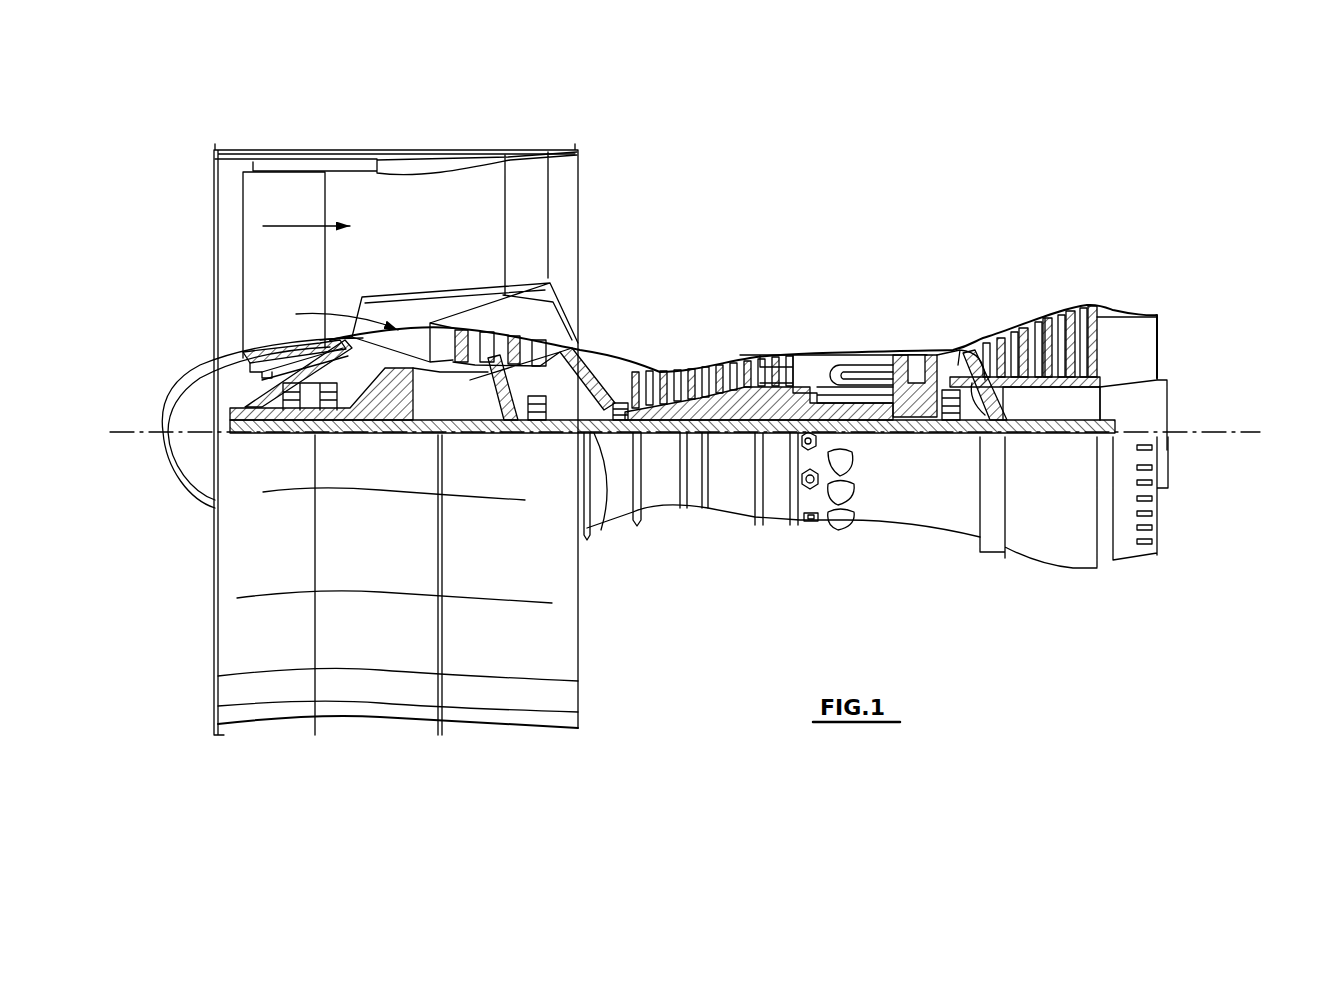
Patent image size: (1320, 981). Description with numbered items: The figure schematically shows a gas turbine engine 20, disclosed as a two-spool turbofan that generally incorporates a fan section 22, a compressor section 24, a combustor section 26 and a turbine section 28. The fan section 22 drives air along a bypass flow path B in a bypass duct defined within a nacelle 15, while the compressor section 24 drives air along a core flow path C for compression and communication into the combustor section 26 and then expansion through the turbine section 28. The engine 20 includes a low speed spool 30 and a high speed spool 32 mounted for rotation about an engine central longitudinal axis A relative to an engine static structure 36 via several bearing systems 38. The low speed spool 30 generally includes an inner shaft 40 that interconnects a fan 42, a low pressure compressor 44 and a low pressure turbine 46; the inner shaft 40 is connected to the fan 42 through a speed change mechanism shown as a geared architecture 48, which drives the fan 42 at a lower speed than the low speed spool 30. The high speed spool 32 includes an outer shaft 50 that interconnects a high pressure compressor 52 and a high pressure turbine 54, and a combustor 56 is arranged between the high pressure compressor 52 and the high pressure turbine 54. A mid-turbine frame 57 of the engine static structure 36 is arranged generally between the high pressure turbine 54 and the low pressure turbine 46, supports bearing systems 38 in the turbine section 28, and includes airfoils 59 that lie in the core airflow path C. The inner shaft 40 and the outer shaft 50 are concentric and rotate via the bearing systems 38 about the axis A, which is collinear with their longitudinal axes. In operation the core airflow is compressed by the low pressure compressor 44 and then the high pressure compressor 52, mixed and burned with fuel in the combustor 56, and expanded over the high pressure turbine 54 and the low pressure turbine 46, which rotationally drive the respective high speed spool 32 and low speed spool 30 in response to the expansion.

The gas turbine engine 20 is at (860, 198).
The fan section 22 is at (326, 140).
The nacelle 15 is at (396, 156).
The fan 42 is at (300, 279).
The low pressure compressor 44 is at (497, 343).
The compressor section 24 is at (628, 344).
The high pressure compressor 52 is at (710, 372).
The high speed spool 32 is at (775, 395).
The combustor section 26 is at (849, 324).
The combustor 56 is at (849, 371).
The high pressure turbine 54 is at (915, 353).
The mid-turbine frame 57 is at (960, 340).
The turbine section 28 is at (1000, 296).
The low pressure turbine 46 is at (1045, 318).
The airfoils 59 is at (972, 383).
The bearing systems 38 is at (533, 420).
The geared architecture 48 is at (403, 418).
The inner shaft 40 is at (600, 527).
The low speed spool 30 is at (734, 446).
The engine static structure 36 is at (776, 526).
The outer shaft 50 is at (869, 421).
The engine central longitudinal axis A is at (1250, 432).
The bypass flow path B is at (297, 222).
The core flow path C is at (337, 318).